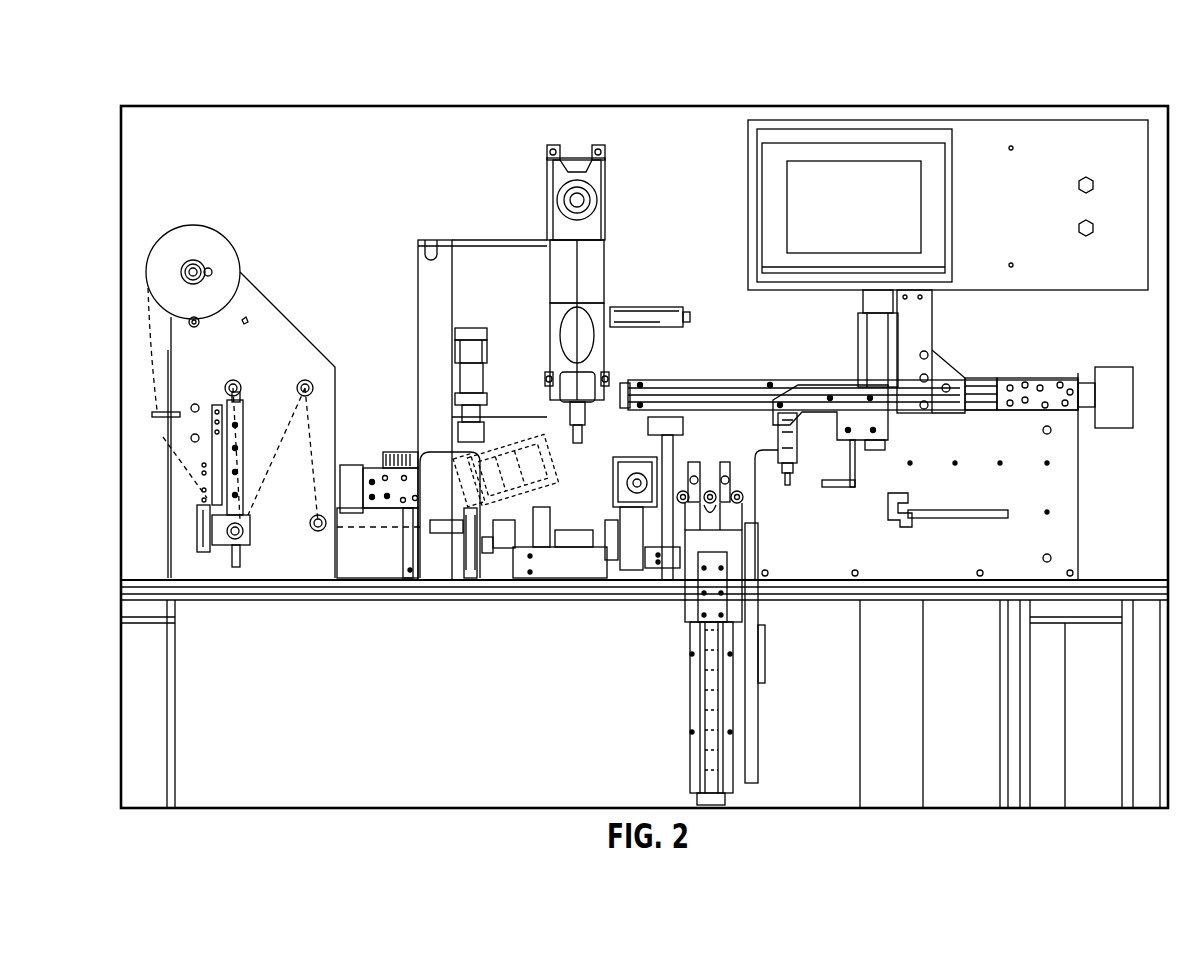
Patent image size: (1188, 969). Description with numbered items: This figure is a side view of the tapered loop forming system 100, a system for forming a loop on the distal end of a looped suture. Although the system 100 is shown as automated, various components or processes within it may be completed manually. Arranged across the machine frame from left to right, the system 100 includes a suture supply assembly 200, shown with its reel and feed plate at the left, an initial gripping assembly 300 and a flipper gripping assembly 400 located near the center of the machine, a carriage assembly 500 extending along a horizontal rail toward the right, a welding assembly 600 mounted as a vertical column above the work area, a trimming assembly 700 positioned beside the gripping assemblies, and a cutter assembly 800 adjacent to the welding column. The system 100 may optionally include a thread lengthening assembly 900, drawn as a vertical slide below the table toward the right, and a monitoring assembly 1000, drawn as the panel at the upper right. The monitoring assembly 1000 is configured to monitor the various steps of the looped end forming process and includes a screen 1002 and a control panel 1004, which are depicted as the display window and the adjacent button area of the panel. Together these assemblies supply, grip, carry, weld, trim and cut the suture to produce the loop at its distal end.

The tapered loop forming system 100 is at (644, 436).
The suture supply assembly 200 is at (255, 401).
The initial gripping assembly 300 is at (415, 479).
The flipper gripping assembly 400 is at (530, 555).
The carriage assembly 500 is at (876, 435).
The welding assembly 600 is at (629, 294).
The trimming assembly 700 is at (622, 567).
The cutter assembly 800 is at (494, 385).
The thread lengthening assembly 900 is at (749, 633).
The monitoring assembly 1000 is at (894, 205).
The screen 1002 is at (854, 205).
The control panel 1004 is at (1047, 206).